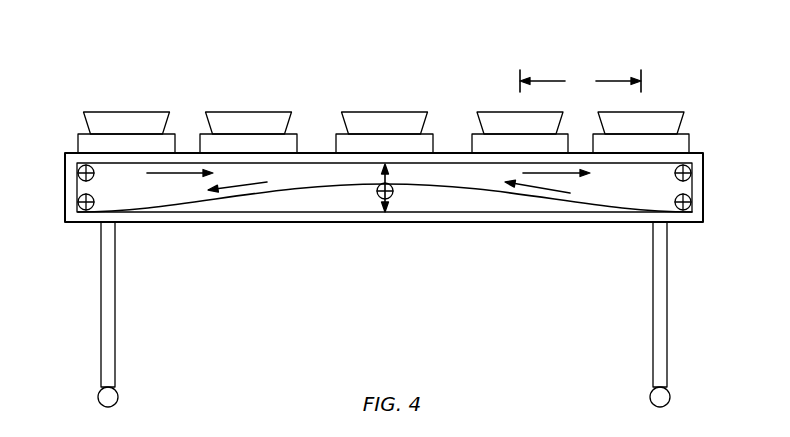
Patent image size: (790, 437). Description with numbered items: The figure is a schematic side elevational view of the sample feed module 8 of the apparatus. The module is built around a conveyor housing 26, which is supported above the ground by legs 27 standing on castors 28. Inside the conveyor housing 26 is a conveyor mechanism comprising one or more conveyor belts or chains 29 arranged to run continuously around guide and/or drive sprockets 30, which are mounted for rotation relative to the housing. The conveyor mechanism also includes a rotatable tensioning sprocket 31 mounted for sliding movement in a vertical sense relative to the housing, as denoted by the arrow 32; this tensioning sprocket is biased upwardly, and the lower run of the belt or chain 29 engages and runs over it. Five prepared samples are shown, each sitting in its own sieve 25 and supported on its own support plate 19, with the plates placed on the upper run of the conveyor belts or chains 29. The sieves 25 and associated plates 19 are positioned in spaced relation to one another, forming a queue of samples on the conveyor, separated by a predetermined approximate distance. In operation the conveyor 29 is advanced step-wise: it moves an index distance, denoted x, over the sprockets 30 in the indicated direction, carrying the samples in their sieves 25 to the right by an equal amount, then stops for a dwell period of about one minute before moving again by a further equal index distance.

The feed module 8 is at (672, 60).
The support plate 19 is at (345, 134).
The sieve 25 is at (117, 120).
The conveyor housing 26 is at (703, 172).
The leg 27 is at (107, 298).
The castor 28 is at (118, 402).
The conveyor belt or chain 29 is at (497, 192).
The guide and/or drive sprocket 30 is at (77, 170).
The tensioning sprocket 31 is at (393, 192).
The arrow 32 is at (375, 192).